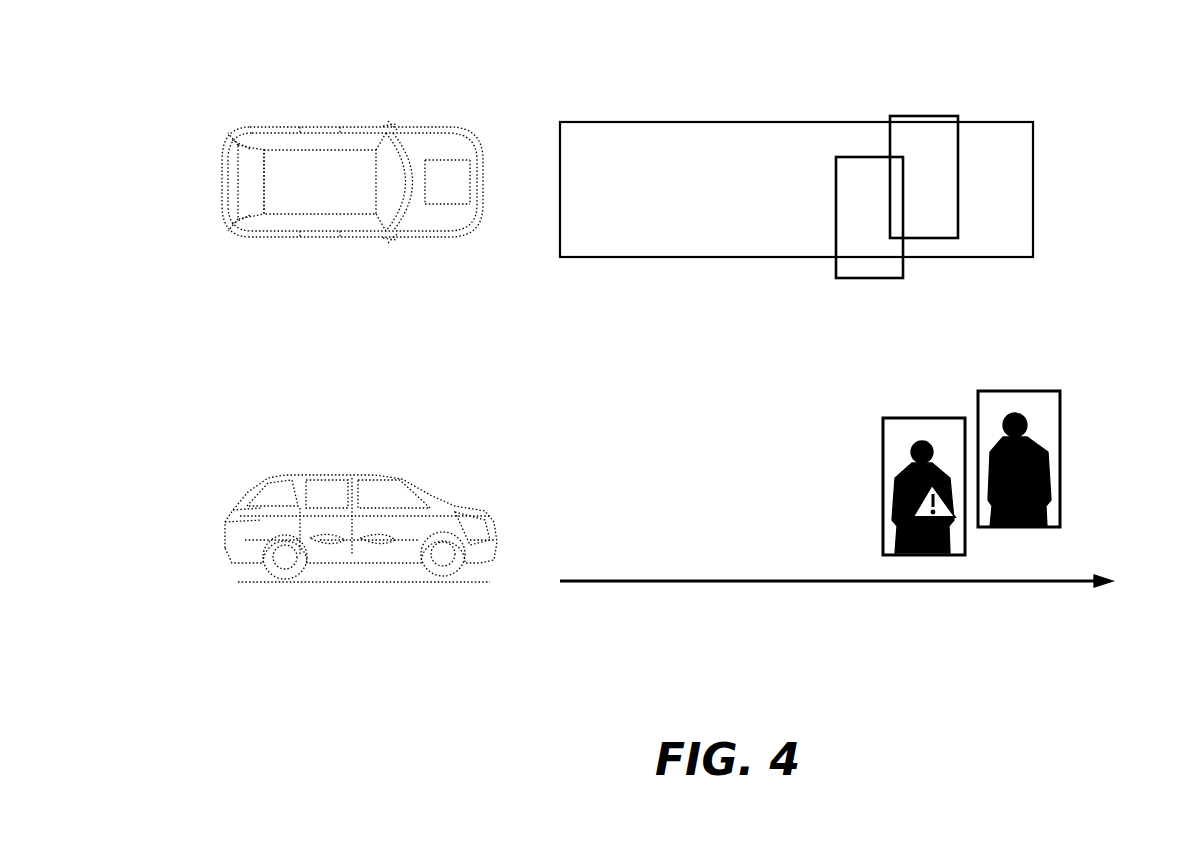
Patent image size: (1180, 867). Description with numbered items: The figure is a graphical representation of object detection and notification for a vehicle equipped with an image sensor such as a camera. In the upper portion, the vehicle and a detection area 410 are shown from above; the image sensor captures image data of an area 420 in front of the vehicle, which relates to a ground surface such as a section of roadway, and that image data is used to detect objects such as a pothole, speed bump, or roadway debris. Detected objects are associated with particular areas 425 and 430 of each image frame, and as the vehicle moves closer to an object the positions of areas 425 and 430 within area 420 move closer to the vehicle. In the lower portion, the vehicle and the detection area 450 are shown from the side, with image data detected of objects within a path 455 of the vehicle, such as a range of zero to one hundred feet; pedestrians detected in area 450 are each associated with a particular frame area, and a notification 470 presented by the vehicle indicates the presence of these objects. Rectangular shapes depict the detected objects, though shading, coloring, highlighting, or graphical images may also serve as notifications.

The detection area 410 is at (592, 88).
The area 420 is at (1035, 182).
The area 425 is at (828, 203).
The area 430 is at (938, 120).
The area 450 is at (605, 465).
The path 455 is at (763, 583).
The notification 470 is at (947, 513).